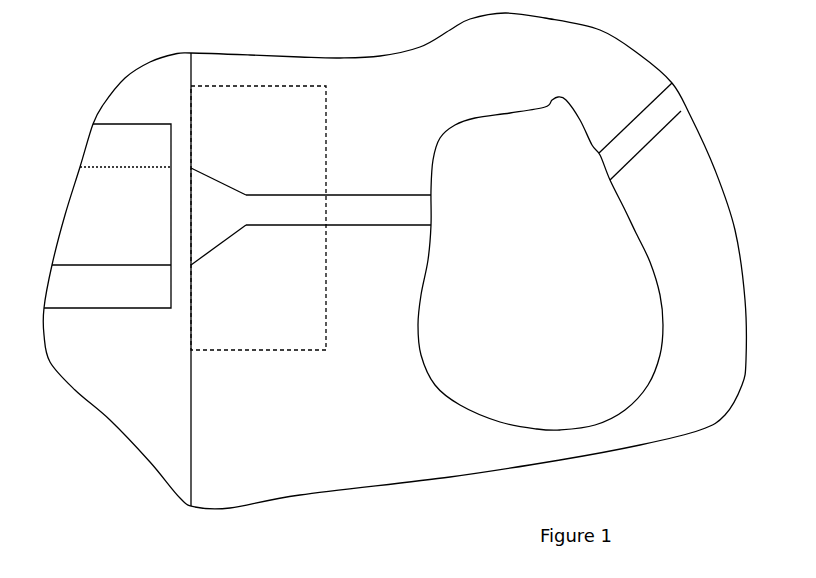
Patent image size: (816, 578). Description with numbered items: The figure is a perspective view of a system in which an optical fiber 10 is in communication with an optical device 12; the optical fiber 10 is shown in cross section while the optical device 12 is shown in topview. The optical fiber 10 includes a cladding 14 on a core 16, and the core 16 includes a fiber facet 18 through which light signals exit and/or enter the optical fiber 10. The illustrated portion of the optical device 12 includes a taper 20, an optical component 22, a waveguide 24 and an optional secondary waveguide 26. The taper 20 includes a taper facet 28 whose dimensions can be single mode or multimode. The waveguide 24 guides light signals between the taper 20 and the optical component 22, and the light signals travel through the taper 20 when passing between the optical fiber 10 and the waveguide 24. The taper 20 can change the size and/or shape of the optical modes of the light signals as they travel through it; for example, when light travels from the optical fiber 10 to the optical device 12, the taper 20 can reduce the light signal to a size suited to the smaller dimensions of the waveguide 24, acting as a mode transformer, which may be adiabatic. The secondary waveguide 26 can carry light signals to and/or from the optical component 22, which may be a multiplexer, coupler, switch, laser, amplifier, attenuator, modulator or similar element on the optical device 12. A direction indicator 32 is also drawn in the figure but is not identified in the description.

The optical fiber 10 is at (143, 106).
The optical device 12 is at (168, 418).
The cladding 14 is at (106, 152).
The core 16 is at (80, 208).
The fiber facet 18 is at (170, 210).
The taper 20 is at (227, 187).
The optical component 22 is at (469, 128).
The waveguide 24 is at (347, 194).
The secondary waveguide 26 is at (648, 105).
The taper facet 28 is at (193, 207).
The flow direction 32 is at (247, 237).